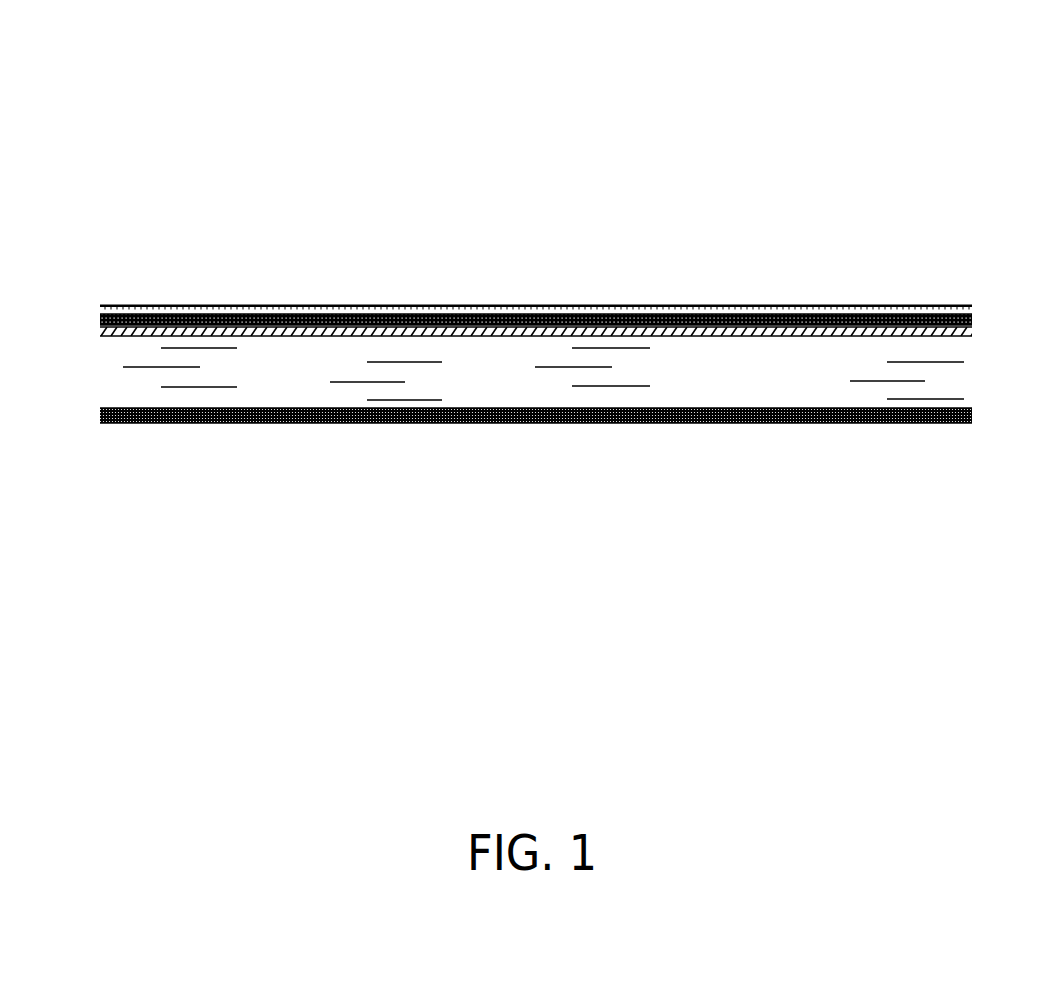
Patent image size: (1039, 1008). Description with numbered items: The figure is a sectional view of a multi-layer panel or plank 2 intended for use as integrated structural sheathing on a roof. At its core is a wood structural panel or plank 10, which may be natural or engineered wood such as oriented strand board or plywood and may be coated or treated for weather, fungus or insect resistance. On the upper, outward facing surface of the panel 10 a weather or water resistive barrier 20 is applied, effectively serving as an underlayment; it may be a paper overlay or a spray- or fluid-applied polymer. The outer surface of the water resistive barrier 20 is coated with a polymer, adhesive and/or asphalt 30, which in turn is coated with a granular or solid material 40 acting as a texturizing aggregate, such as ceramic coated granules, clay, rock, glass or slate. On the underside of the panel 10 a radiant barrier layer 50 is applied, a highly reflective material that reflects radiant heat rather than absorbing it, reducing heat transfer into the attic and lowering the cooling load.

The multi-layer panel or plank 2 is at (218, 168).
The wood structural panel or plank 10 is at (712, 385).
The weather or water resistive barrier 20 is at (555, 328).
The polymer, adhesive and/or asphalt 30 is at (672, 318).
The granular or solid material 40 is at (757, 308).
The radiant barrier layer 50 is at (567, 422).